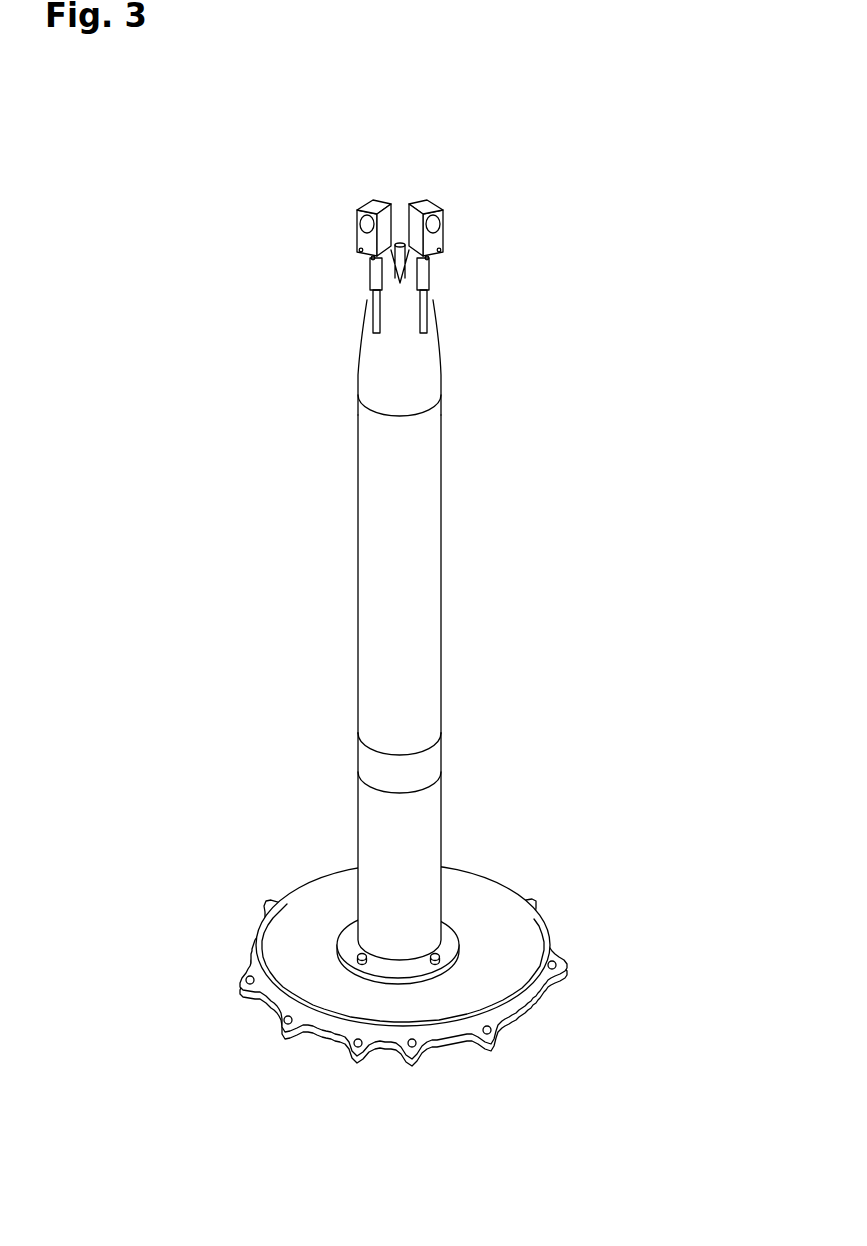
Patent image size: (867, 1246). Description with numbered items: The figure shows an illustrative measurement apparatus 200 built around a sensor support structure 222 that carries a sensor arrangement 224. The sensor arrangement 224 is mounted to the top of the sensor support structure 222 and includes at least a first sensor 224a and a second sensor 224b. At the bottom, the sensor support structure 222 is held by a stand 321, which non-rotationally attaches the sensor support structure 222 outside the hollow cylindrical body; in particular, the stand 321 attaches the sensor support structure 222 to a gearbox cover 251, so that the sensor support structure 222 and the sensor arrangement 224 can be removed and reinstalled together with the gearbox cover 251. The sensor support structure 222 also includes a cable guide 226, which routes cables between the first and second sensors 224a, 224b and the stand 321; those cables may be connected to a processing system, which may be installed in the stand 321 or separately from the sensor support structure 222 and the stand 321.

The measurement apparatus 200 is at (597, 123).
The sensor support structure 222 is at (414, 548).
The cable guide 226 is at (414, 640).
The sensor arrangement 224 is at (407, 173).
The first sensor 224a is at (370, 205).
The second sensor 224b is at (430, 205).
The stand 321 is at (450, 940).
The gearbox cover 251 is at (512, 943).